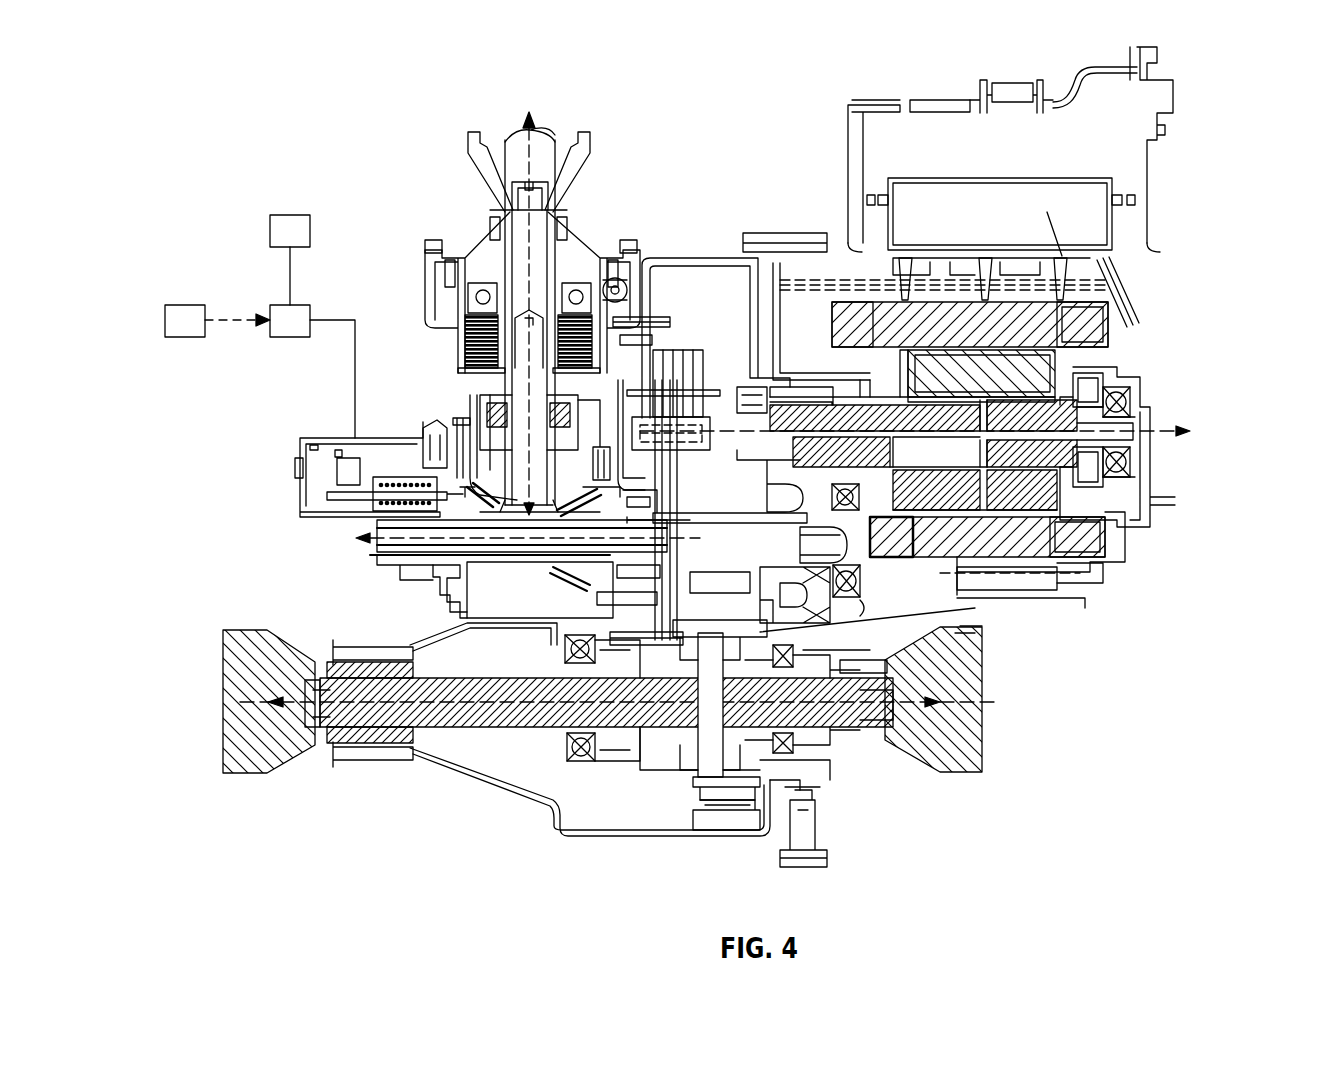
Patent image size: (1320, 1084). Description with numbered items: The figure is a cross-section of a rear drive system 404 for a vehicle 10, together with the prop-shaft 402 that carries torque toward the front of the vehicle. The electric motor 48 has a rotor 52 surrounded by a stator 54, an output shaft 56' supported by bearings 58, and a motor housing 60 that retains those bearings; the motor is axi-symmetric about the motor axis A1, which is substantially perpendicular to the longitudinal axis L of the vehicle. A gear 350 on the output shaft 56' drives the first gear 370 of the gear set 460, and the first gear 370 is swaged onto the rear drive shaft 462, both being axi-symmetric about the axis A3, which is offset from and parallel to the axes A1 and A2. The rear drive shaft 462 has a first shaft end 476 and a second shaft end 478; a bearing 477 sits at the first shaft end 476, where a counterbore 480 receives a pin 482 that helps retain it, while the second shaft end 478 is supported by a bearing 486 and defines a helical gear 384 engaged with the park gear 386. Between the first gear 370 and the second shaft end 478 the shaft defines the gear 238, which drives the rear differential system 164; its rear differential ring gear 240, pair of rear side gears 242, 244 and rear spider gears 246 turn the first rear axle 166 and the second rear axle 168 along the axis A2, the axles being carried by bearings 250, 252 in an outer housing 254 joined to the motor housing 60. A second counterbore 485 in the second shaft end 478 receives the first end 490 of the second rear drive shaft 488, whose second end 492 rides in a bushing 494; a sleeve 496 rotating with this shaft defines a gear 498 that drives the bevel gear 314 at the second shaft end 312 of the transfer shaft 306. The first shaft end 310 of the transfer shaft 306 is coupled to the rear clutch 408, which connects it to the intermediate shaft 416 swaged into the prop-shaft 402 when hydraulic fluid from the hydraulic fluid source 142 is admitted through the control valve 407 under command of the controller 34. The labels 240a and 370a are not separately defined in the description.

The vehicle 10 is at (1236, 72).
The controller 34 is at (183, 337).
The electric motor 48 is at (1206, 250).
The rotor 52 is at (1035, 336).
The stator 54 is at (1035, 368).
The output shaft 56' is at (1134, 420).
The bearings 58 is at (1120, 395).
The motor housing 60 is at (1148, 228).
The hydraulic fluid source 142 is at (290, 215).
The rear differential system 164 is at (858, 832).
The first rear axle 166 is at (453, 716).
The second rear axle 168 is at (900, 673).
The gear 238 is at (677, 509).
The rear differential ring gear 240 is at (738, 842).
The sun gear hub 240a is at (727, 834).
The rear side gear 242 is at (613, 737).
The rear side gear 244 is at (772, 698).
The rear spider gears 246 is at (642, 694).
The bearing 250 is at (793, 754).
The bearing 252 is at (573, 776).
The outer housing 254 is at (660, 790).
The transfer shaft 306 is at (457, 440).
The first shaft end 310 is at (643, 258).
The second shaft end 312 is at (607, 490).
The bevel gear 314 is at (413, 556).
The gear 350 is at (831, 408).
The first gear 370 is at (860, 416).
The shaft hub 370a is at (828, 470).
The gear 384 is at (726, 431).
The park gear 386 is at (840, 627).
The prop-shaft 402 is at (562, 124).
The rear drive system 404 is at (188, 503).
The control valve 407 is at (290, 337).
The rear clutch 408 is at (450, 349).
The intermediate shaft 416 is at (533, 226).
The gear set 460 is at (984, 634).
The rear drive shaft 462 is at (875, 461).
The first shaft end 476 is at (866, 578).
The bearing 477 is at (882, 478).
The second shaft end 478 is at (556, 517).
The counterbore 480 is at (846, 541).
The pin 482 is at (888, 538).
The second counterbore 485 is at (540, 337).
The bearing 486 is at (643, 505).
The second rear drive shaft 488 is at (480, 568).
The first end 490 is at (733, 586).
The second end 492 is at (342, 537).
The bushing 494 is at (437, 523).
The sleeve 496 is at (520, 602).
The gear 498 is at (505, 574).
The motor axis A1 is at (1168, 432).
The axis A2 is at (912, 700).
The axis A3 is at (906, 520).
The longitudinal axis L is at (484, 404).